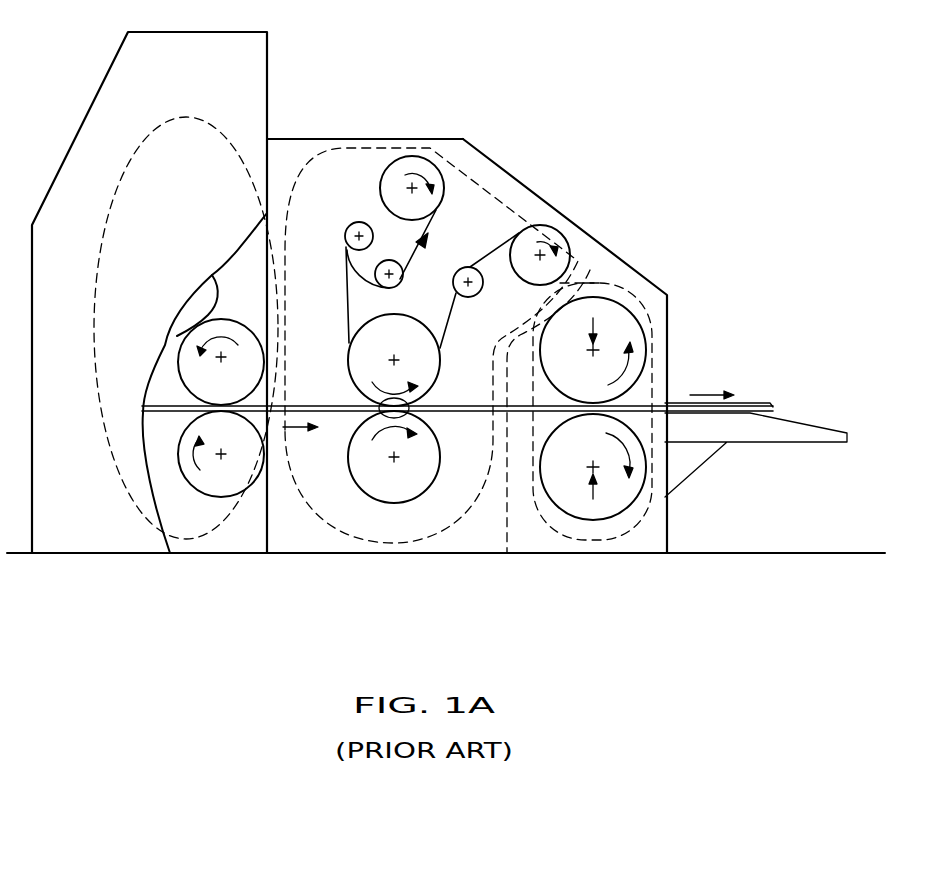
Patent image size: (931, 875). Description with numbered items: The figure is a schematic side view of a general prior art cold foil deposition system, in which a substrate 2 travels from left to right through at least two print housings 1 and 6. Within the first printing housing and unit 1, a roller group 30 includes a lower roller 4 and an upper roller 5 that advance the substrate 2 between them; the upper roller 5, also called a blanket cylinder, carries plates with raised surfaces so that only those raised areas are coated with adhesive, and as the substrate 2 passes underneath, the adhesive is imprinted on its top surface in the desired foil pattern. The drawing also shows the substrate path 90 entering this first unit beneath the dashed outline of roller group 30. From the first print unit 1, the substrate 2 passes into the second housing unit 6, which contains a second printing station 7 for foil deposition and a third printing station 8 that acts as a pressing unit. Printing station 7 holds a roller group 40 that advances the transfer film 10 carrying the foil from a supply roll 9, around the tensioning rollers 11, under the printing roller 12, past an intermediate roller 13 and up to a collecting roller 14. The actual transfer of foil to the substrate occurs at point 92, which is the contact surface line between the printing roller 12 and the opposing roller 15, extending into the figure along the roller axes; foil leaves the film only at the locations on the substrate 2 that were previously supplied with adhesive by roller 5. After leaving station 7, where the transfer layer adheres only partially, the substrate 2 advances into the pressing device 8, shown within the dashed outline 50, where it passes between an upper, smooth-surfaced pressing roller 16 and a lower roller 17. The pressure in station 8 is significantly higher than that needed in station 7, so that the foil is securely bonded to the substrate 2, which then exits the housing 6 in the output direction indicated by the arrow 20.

The first printing housing and unit 1 is at (98, 152).
The substrate 2 is at (165, 412).
The lower roller 4 is at (228, 497).
The upper roller 5 is at (187, 378).
The second housing unit 6 is at (607, 247).
The second printing station 7 is at (340, 152).
The third printing station 8 is at (640, 279).
The supply roll 9 is at (401, 162).
The transfer film 10 is at (440, 218).
The tensioning rollers 11 is at (345, 255).
The printing roller 12 is at (352, 365).
The intermediate roller 13 is at (477, 267).
The collecting roller 14 is at (557, 243).
The roller 15 is at (403, 490).
The upper smooth-surfaced pressing roller 16 is at (648, 337).
The lower roller 17 is at (605, 510).
The output direction 20 is at (752, 403).
The roller group 30 is at (187, 542).
The roller group 40 is at (338, 530).
The finishing station 50 is at (587, 540).
The web entry guide 90 is at (190, 420).
The point 92 is at (383, 415).